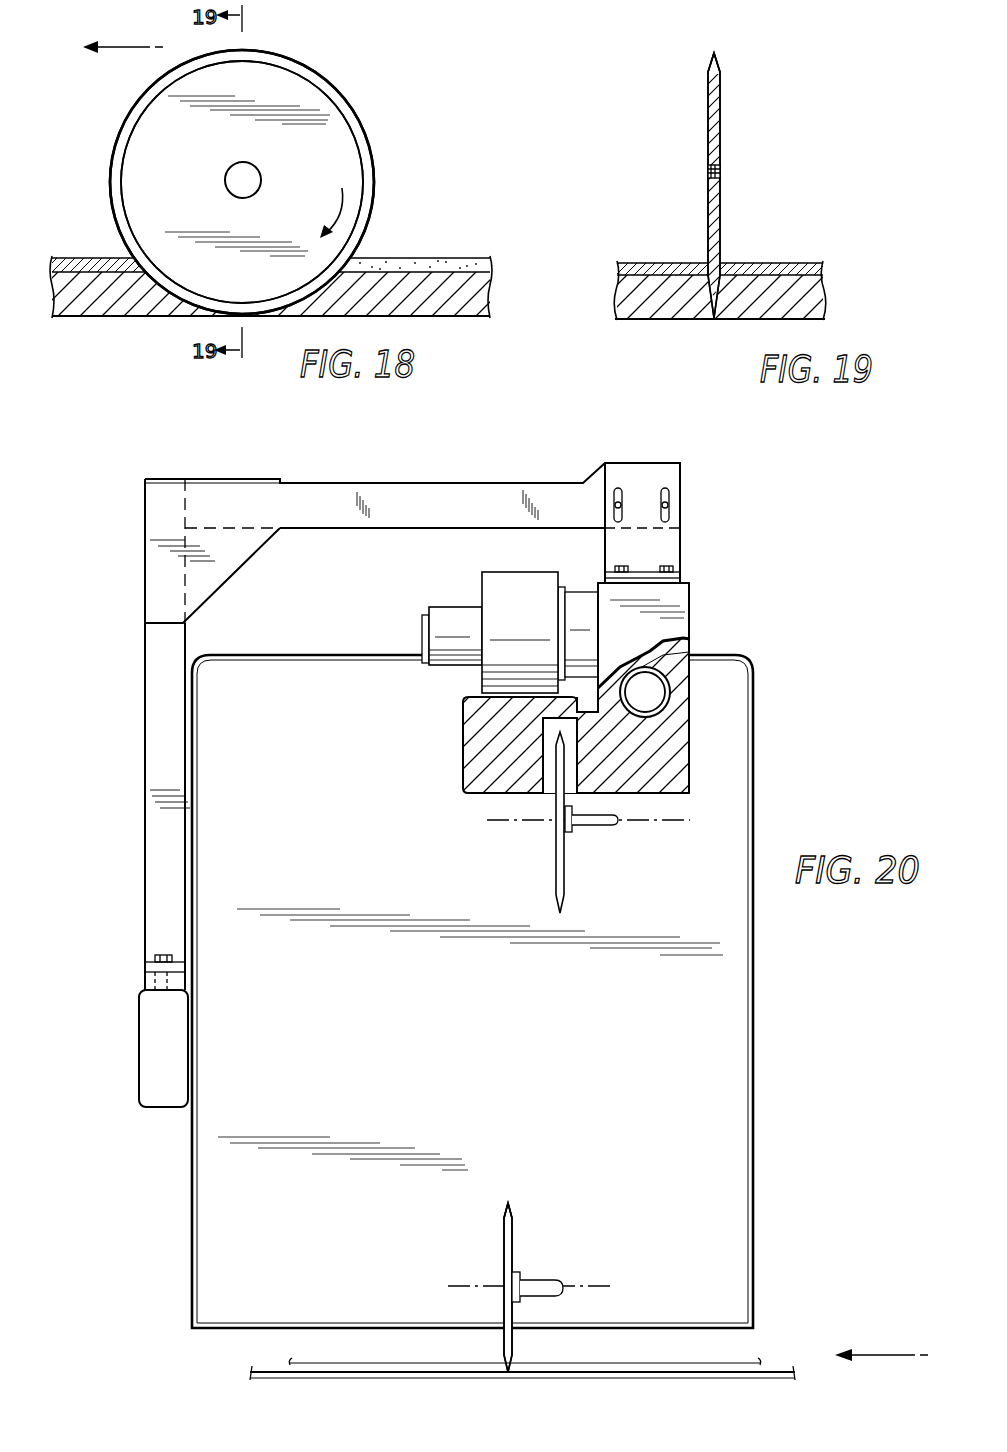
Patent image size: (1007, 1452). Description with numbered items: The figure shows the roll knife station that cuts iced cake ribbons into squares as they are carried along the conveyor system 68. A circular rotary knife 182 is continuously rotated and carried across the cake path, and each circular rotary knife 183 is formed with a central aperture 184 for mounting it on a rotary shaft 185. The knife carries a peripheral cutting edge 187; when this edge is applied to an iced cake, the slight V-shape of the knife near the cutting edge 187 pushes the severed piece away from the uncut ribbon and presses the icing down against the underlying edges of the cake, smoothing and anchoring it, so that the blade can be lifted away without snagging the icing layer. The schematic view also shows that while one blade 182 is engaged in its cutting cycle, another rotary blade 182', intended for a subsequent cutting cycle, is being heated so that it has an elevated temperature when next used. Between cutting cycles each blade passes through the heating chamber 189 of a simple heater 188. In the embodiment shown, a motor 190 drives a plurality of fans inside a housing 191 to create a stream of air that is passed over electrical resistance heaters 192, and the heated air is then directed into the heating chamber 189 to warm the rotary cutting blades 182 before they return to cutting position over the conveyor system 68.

In FIG. 18, the conveyor system 68 is at (470, 318).
In FIG. 19, the conveyor system 68 is at (668, 320).
In FIG. 20, the conveyor system 68 is at (777, 1371).
In FIG. 18, the rotary knife 182 is at (274, 182).
In FIG. 19, the rotary knife 182 is at (674, 185).
In FIG. 20, the rotary knife 182 is at (477, 1287).
In FIG. 20, the rotary blade 182' is at (523, 822).
In FIG. 18, the circular rotary knife 183 is at (343, 152).
In FIG. 19, the circular rotary knife 183 is at (720, 122).
In FIG. 20, the circular rotary knife 183 is at (512, 1238).
In FIG. 18, the central aperture 184 is at (248, 178).
In FIG. 19, the central aperture 184 is at (720, 178).
In FIG. 20, the rotary shaft 185 is at (548, 1282).
In FIG. 18, the peripheral cutting edge 187 is at (355, 112).
In FIG. 19, the peripheral cutting edge 187 is at (716, 55).
In FIG. 20, the peripheral cutting edge 187 is at (510, 1205).
In FIG. 20, the heater 188 is at (688, 718).
In FIG. 20, the heating chamber 189 is at (568, 785).
In FIG. 20, the motor 190 is at (455, 607).
In FIG. 20, the housing 191 is at (522, 572).
In FIG. 20, the electrical resistance heaters 192 is at (653, 680).